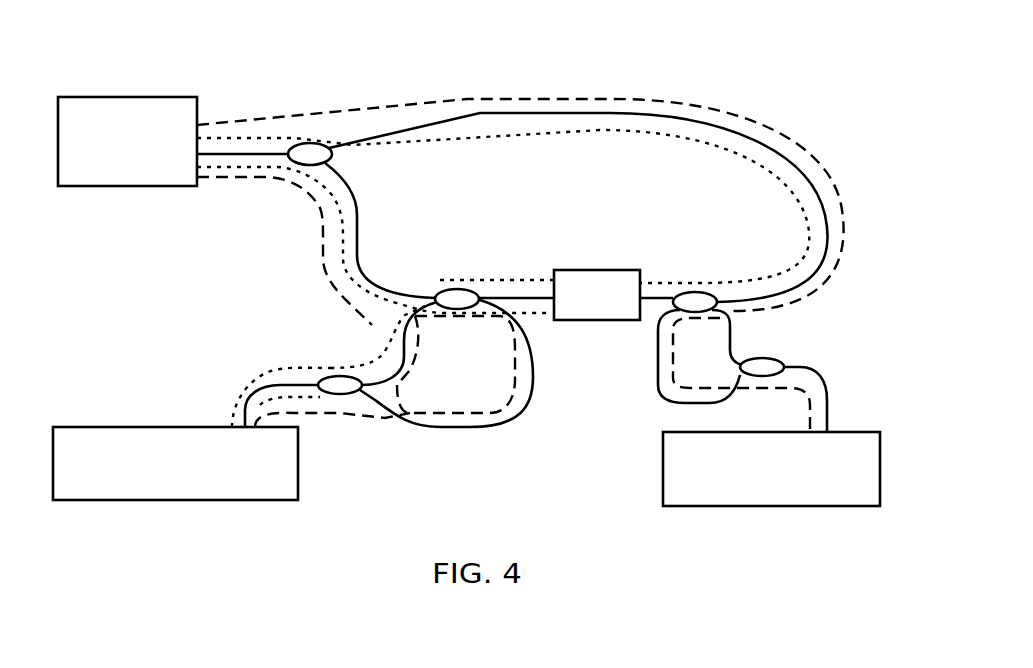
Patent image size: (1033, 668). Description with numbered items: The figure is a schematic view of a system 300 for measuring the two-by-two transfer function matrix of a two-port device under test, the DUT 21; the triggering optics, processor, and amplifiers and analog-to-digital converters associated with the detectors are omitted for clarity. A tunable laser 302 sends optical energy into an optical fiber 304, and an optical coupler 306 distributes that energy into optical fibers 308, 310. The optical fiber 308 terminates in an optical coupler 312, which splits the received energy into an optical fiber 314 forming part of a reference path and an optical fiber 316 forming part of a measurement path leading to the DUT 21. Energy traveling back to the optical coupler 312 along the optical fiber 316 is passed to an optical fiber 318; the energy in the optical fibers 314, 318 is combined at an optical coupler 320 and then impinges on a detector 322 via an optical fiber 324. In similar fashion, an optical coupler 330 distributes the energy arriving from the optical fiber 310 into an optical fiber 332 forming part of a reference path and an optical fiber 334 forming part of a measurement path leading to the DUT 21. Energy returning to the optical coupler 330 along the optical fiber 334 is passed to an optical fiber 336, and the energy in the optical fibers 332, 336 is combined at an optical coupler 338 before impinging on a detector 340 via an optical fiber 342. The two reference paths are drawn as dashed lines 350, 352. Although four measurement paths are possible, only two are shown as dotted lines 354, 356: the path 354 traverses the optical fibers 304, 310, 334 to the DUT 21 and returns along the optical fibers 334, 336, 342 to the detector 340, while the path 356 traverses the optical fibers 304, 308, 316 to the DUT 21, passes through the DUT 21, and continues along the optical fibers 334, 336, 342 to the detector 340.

The system 300 is at (664, 52).
The tunable laser 302 is at (115, 97).
The optical fiber 304 is at (217, 153).
The optical coupler 306 is at (311, 143).
The optical fiber 308 is at (459, 113).
The optical fiber 310 is at (357, 197).
The optical coupler 312 is at (697, 292).
The optical fiber 314 is at (656, 373).
The optical fiber 316 is at (657, 297).
The optical fiber 318 is at (731, 350).
The optical coupler 320 is at (781, 359).
The detector 322 is at (663, 462).
The optical fiber 324 is at (829, 390).
The optical coupler 330 is at (462, 288).
The optical fiber 332 is at (430, 428).
The optical fiber 334 is at (508, 296).
The optical fiber 336 is at (400, 338).
The optical coupler 338 is at (312, 370).
The detector 340 is at (300, 468).
The optical fiber 342 is at (240, 405).
The reference path 350 is at (265, 178).
The reference path 352 is at (710, 118).
The measurement path 354 is at (343, 247).
The measurement path 356 is at (702, 142).
The device under test 21 is at (604, 270).